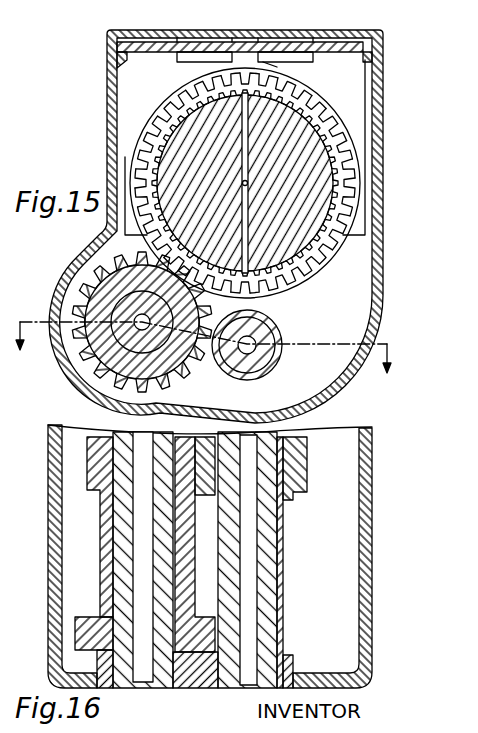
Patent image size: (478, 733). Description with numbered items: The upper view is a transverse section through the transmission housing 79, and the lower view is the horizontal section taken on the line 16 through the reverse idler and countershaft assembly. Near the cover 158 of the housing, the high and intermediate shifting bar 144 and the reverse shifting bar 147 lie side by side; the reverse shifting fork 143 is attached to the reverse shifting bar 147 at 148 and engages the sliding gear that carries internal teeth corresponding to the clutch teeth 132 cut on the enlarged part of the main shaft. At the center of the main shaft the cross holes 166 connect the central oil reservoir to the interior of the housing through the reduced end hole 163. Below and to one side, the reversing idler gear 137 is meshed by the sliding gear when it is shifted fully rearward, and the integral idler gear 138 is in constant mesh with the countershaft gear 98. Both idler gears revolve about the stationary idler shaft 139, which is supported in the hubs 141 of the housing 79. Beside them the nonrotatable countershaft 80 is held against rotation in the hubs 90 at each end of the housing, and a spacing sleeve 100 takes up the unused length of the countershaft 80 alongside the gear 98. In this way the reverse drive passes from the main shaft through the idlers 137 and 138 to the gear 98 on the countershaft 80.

In FIG. 15, the transmission housing 79 is at (108, 110).
In FIG. 16, the transmission housing 79 is at (55, 583).
In FIG. 15, the cover 158 is at (125, 32).
In FIG. 15, the high and intermediate shifting bar 144 is at (192, 53).
In FIG. 15, the reverse shifting bar 147 is at (297, 57).
In FIG. 15, the attachment point of reverse shifting fork to reverse shifting bar 148 is at (277, 67).
In FIG. 15, the reverse shifting fork 143 is at (153, 113).
In FIG. 15, the clutch teeth 132 is at (160, 163).
In FIG. 15, the cross holes 166 is at (248, 237).
In FIG. 15, the reduced-diameter end hole of reservoir 163 is at (247, 183).
In FIG. 15, the reversing idler gear 137 is at (100, 278).
In FIG. 16, the reversing idler gear 137 is at (80, 635).
In FIG. 15, the countershaft 80 is at (267, 328).
In FIG. 16, the countershaft 80 is at (268, 628).
In FIG. 15, the spacing sleeve 100 is at (277, 362).
In FIG. 16, the spacing sleeve 100 is at (280, 567).
In FIG. 15, the section line 16— 16 is at (208, 359).
In FIG. 16, the idler gear 138 is at (90, 463).
In FIG. 16, the stationary idler shaft 139 is at (120, 527).
In FIG. 16, the hubs 141 is at (97, 658).
In FIG. 16, the countershaft gear 98 is at (302, 473).
In FIG. 16, the hubs 90 is at (292, 655).